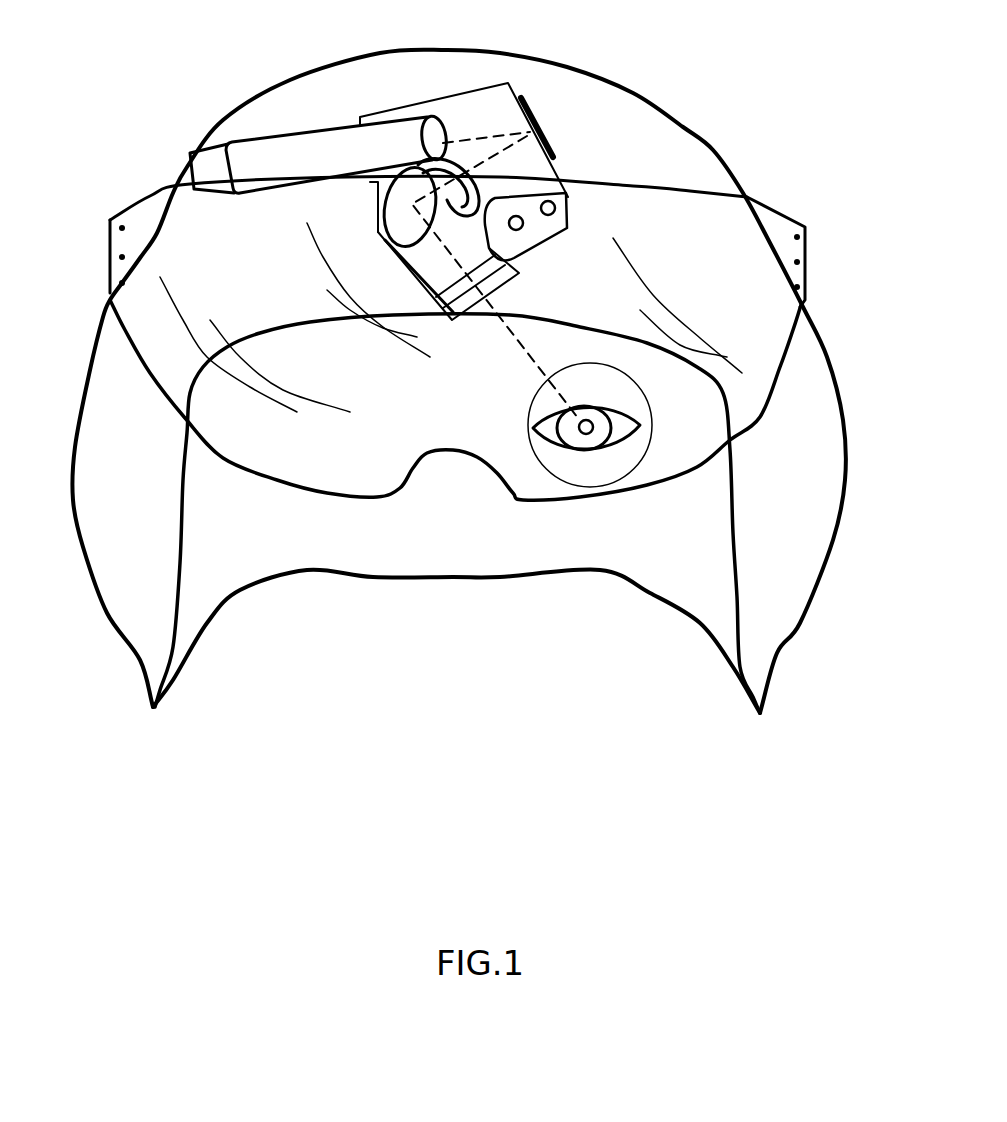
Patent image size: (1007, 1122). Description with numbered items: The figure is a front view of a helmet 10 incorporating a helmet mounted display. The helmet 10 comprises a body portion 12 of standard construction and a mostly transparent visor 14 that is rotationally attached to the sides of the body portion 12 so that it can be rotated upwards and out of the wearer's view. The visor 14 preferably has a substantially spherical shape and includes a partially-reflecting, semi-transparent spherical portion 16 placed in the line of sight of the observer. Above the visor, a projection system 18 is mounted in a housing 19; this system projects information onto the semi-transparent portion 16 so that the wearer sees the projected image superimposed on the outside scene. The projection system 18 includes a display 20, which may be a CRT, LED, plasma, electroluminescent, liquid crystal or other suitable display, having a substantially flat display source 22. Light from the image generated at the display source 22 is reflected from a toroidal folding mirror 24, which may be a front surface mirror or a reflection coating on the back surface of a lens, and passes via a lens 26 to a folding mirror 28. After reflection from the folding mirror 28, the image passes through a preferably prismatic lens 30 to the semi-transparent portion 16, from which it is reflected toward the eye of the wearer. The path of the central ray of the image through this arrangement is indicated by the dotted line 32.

The helmet 10 is at (300, 671).
The body portion 12 is at (780, 517).
The visor 14 is at (288, 443).
The semi-transparent spherical portion 16 is at (546, 466).
The projection system 18 is at (330, 231).
The housing 19 is at (413, 108).
The display 20 is at (300, 147).
The display source 22 is at (444, 125).
The toroidal folding mirror 24 is at (537, 110).
The lens 26 is at (500, 177).
The folding mirror 28 is at (388, 203).
The prismatic lens 30 is at (428, 292).
The dotted line 32 is at (510, 325).